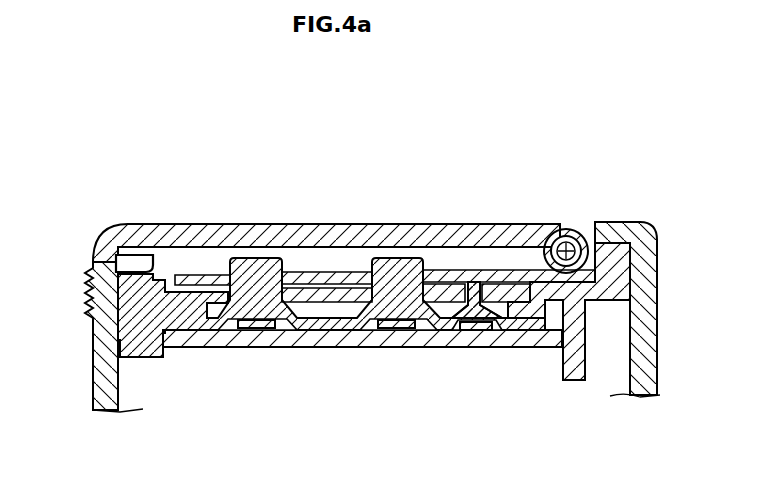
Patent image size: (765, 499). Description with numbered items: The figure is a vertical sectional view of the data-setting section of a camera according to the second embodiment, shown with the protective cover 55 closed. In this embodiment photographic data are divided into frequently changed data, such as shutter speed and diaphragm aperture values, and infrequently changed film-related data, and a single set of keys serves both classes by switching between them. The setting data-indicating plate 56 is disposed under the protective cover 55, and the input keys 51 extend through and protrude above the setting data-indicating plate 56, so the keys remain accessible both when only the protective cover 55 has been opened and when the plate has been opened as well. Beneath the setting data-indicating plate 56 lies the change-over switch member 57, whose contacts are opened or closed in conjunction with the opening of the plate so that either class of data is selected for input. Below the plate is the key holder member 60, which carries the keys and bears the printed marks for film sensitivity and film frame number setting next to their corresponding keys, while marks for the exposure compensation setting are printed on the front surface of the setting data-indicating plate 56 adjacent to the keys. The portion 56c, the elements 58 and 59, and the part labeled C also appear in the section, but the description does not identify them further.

The protective cover 55 is at (187, 236).
The setting data-indicating plate 56 is at (217, 275).
The holder portion 56c is at (433, 270).
The change-over switch member 57 is at (478, 290).
The rubber connectors 58 is at (263, 329).
The bottom plate / circuit board 59 is at (208, 342).
The key holder member 60 is at (157, 300).
The input keys 51 is at (383, 263).
The case C is at (624, 222).